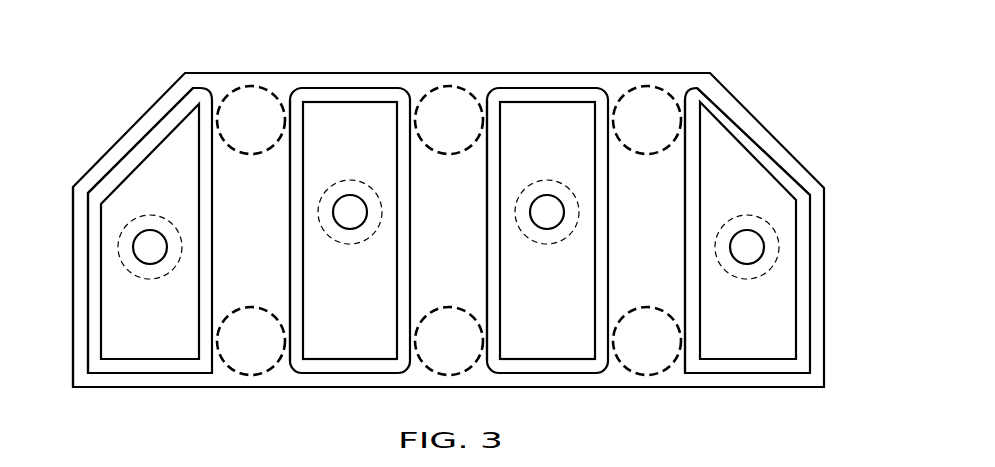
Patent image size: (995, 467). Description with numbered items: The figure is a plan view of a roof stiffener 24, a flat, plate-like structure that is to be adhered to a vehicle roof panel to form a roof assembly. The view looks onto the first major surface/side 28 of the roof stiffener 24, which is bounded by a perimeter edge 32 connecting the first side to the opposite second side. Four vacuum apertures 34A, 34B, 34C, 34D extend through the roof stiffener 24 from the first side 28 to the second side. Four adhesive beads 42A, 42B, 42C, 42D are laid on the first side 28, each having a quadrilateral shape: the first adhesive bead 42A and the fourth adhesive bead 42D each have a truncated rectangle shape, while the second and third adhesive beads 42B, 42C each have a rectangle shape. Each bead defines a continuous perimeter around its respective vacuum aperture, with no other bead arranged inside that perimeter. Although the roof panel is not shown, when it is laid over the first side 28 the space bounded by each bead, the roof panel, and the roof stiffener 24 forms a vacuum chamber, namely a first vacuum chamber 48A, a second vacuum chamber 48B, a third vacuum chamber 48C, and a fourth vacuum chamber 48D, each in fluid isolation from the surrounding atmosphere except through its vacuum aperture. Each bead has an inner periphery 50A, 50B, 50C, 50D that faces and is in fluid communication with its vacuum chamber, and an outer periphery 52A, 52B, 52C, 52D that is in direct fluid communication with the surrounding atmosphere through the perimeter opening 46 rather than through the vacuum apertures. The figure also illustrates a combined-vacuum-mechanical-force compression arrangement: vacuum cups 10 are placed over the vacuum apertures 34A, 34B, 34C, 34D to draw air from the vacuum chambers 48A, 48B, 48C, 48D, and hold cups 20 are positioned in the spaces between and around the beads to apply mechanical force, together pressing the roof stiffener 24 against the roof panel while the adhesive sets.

The vacuum cup 10 is at (130, 272).
The hold cup 20 is at (240, 154).
The roof stiffener 24 is at (78, 97).
The first major surface/side 28 is at (657, 197).
The perimeter edge 32 is at (72, 298).
The first vacuum aperture 34A is at (155, 255).
The second vacuum aperture 34B is at (355, 218).
The third vacuum aperture 34C is at (555, 218).
The fourth vacuum aperture 34D is at (755, 245).
The first adhesive bead 42A is at (142, 366).
The second adhesive bead 42B is at (357, 93).
The third adhesive bead 42C is at (577, 93).
The fourth adhesive bead 42D is at (753, 148).
The perimeter opening 46 is at (117, 150).
The first vacuum chamber 48A is at (170, 163).
The second vacuum chamber 48B is at (325, 120).
The third vacuum chamber 48C is at (530, 125).
The fourth vacuum chamber 48D is at (775, 343).
The inner periphery of first adhesive bead 50A is at (103, 222).
The inner periphery of second adhesive bead 50B is at (304, 160).
The inner periphery of third adhesive bead 50C is at (500, 293).
The inner periphery of fourth adhesive bead 50D is at (700, 293).
The outer periphery of first adhesive bead 52A is at (88, 240).
The outer periphery of second adhesive bead 52B is at (290, 230).
The outer periphery of third adhesive bead 52C is at (485, 229).
The outer periphery of fourth adhesive bead 52D is at (685, 230).